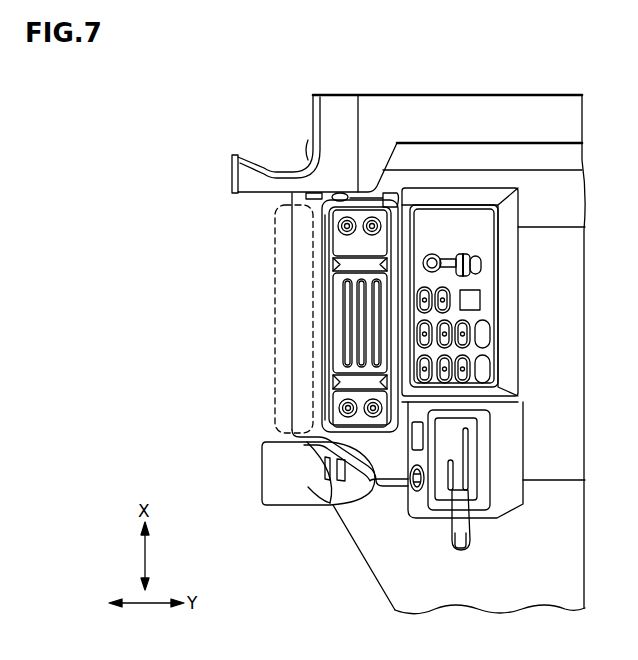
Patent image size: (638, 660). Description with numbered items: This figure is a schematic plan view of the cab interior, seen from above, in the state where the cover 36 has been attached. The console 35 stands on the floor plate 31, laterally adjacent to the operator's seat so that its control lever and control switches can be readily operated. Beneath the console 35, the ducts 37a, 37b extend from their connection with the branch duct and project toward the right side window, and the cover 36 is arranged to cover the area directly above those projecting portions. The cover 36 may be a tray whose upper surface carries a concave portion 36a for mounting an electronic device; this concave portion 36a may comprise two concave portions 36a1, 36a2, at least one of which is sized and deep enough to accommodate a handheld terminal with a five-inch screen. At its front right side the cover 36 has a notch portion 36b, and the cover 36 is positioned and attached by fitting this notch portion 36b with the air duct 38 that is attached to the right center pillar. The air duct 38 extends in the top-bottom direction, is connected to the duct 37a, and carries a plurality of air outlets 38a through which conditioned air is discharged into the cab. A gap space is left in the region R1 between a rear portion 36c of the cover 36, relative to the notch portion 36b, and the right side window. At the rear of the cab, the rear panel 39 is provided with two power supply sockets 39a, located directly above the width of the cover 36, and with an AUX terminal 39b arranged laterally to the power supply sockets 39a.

The floor plate 31 is at (397, 568).
The console 35 is at (447, 233).
The cover 36 is at (322, 232).
The concave portion 36a is at (282, 291).
The concave portion 36a1 is at (353, 330).
The concave portion 36a2 is at (355, 247).
The notch portion 36b is at (377, 485).
The rear portion 36c is at (320, 350).
The duct 37a is at (322, 440).
The duct 37b is at (308, 143).
The air duct 38 is at (275, 472).
The air outlets 38a is at (329, 482).
The rear panel 39 is at (334, 128).
The power supply sockets 39a is at (342, 192).
The AUX terminal 39b is at (312, 188).
The region R1 is at (278, 207).